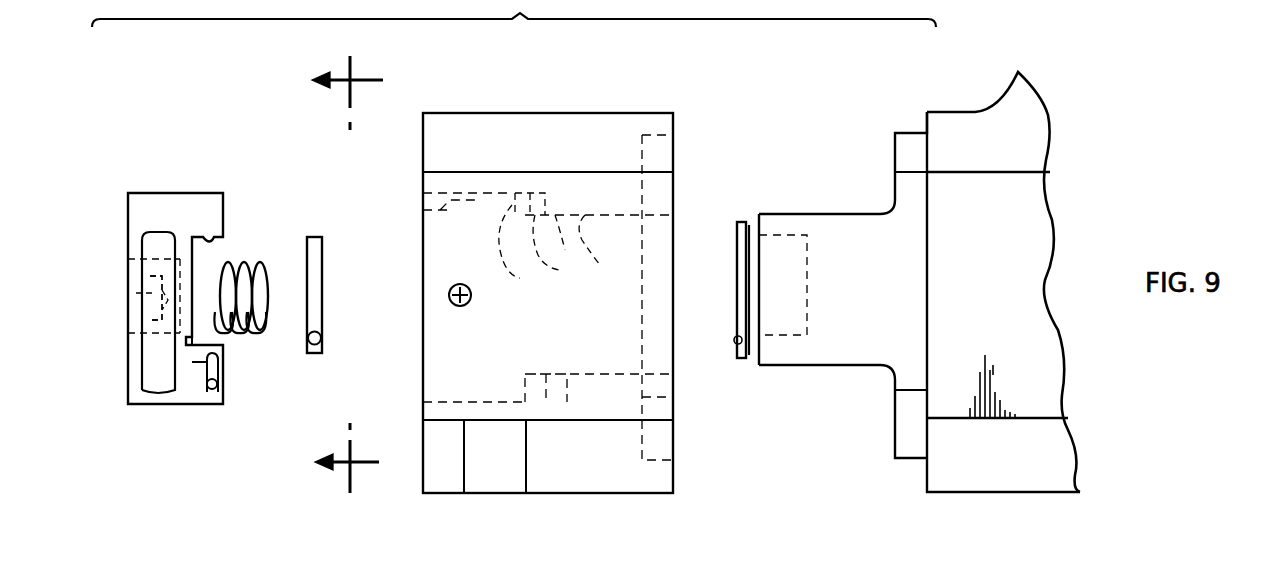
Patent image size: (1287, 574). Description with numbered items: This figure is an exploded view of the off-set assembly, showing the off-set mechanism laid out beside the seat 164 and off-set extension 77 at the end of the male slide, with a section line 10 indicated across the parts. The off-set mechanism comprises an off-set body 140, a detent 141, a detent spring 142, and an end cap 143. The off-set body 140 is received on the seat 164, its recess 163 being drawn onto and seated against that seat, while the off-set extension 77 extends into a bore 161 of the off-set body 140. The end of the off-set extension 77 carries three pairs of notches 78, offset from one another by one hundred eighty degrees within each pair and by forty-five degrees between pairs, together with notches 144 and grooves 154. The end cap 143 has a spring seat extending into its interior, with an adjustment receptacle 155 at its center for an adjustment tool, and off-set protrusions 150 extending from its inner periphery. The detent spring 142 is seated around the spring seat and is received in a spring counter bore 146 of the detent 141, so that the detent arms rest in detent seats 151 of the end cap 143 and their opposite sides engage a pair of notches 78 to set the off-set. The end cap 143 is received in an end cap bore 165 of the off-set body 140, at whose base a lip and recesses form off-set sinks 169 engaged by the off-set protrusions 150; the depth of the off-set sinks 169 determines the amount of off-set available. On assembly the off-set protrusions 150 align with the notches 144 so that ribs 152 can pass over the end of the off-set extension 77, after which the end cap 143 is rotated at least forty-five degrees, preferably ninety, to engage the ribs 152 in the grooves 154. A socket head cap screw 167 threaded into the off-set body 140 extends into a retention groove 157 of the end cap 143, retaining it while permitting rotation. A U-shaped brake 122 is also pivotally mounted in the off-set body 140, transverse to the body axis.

The section line 10 is at (351, 271).
The off-set extension 77 is at (825, 367).
The notches 78 is at (735, 345).
The U-shaped brake 122 is at (494, 480).
The off-set body 140 is at (557, 118).
The detent 141 is at (323, 292).
The detent spring 142 is at (265, 290).
The end cap 143 is at (170, 212).
The notches 144 is at (740, 220).
The spring counter bore 146 is at (775, 573).
The off-set protrusions 150 is at (212, 212).
The detent seats 151 is at (192, 340).
The ribs 152 is at (218, 375).
The grooves 154 is at (736, 282).
The adjustment receptacle 155 is at (130, 300).
The retention groove 157 is at (153, 404).
The bore 161 is at (599, 253).
The recess 163 is at (677, 437).
The seat 164 is at (910, 440).
The end cap bore 165 is at (425, 208).
The socket head cap screw 167 is at (450, 290).
The off-set sinks 169 is at (534, 242).